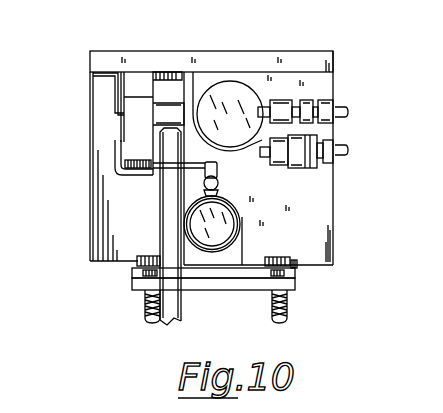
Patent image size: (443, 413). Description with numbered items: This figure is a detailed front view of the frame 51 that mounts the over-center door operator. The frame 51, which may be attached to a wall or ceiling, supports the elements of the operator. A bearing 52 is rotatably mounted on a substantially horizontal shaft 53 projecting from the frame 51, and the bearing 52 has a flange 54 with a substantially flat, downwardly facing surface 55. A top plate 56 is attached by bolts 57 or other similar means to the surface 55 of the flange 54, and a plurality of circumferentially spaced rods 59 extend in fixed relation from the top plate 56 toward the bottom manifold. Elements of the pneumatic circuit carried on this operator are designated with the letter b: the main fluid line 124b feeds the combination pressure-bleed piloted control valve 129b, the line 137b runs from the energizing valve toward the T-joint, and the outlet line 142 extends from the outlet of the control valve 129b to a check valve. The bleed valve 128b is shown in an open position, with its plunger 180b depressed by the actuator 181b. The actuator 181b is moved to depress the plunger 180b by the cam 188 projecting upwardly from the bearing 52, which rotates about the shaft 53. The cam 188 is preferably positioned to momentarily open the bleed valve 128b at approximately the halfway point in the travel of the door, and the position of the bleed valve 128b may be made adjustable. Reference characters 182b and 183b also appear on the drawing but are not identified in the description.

The frame 51 is at (287, 51).
The bearing 52 is at (243, 242).
The shaft 53 is at (240, 225).
The flange 54 is at (297, 276).
The surface 55 is at (262, 279).
The top plate 56 is at (212, 290).
The bolts 57 is at (137, 262).
The rods 59 is at (145, 320).
The main fluid line 124b is at (258, 129).
The bleed valve 128b is at (120, 125).
The control valve 129b is at (227, 80).
The line 137b is at (346, 108).
The outlet line 142 is at (178, 322).
The plunger 180b is at (115, 167).
The actuator 181b is at (150, 176).
The cam block 182b is at (205, 165).
The roller 183b is at (218, 183).
The cam 188 is at (217, 193).